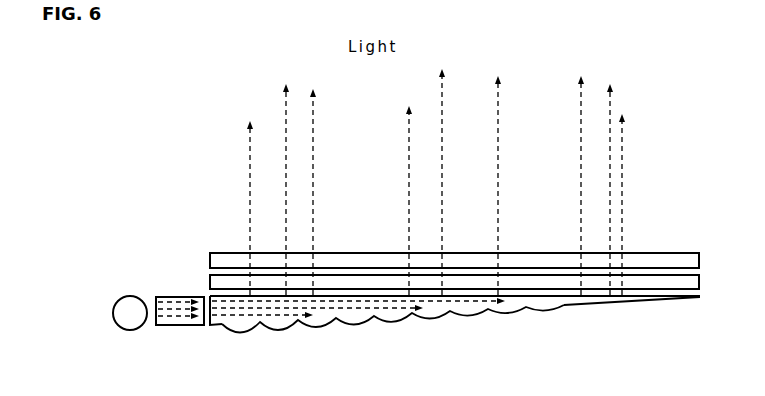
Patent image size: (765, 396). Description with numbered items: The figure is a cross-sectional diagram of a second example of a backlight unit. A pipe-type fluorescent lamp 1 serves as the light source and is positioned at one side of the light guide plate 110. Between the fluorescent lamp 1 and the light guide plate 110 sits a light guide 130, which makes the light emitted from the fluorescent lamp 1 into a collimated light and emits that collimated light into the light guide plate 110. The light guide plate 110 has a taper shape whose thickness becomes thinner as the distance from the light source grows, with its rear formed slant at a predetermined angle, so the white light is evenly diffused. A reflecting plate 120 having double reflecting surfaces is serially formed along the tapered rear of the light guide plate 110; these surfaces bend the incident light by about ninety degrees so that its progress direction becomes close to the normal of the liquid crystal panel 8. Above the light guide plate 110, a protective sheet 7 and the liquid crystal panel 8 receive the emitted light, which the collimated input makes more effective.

The fluorescent lamp 1 is at (126, 313).
The protective sheet 7 is at (210, 281).
The liquid crystal panel 8 is at (210, 256).
The light guide plate 110 is at (585, 304).
The reflecting plate 120 is at (317, 327).
The light guide 130 is at (178, 327).